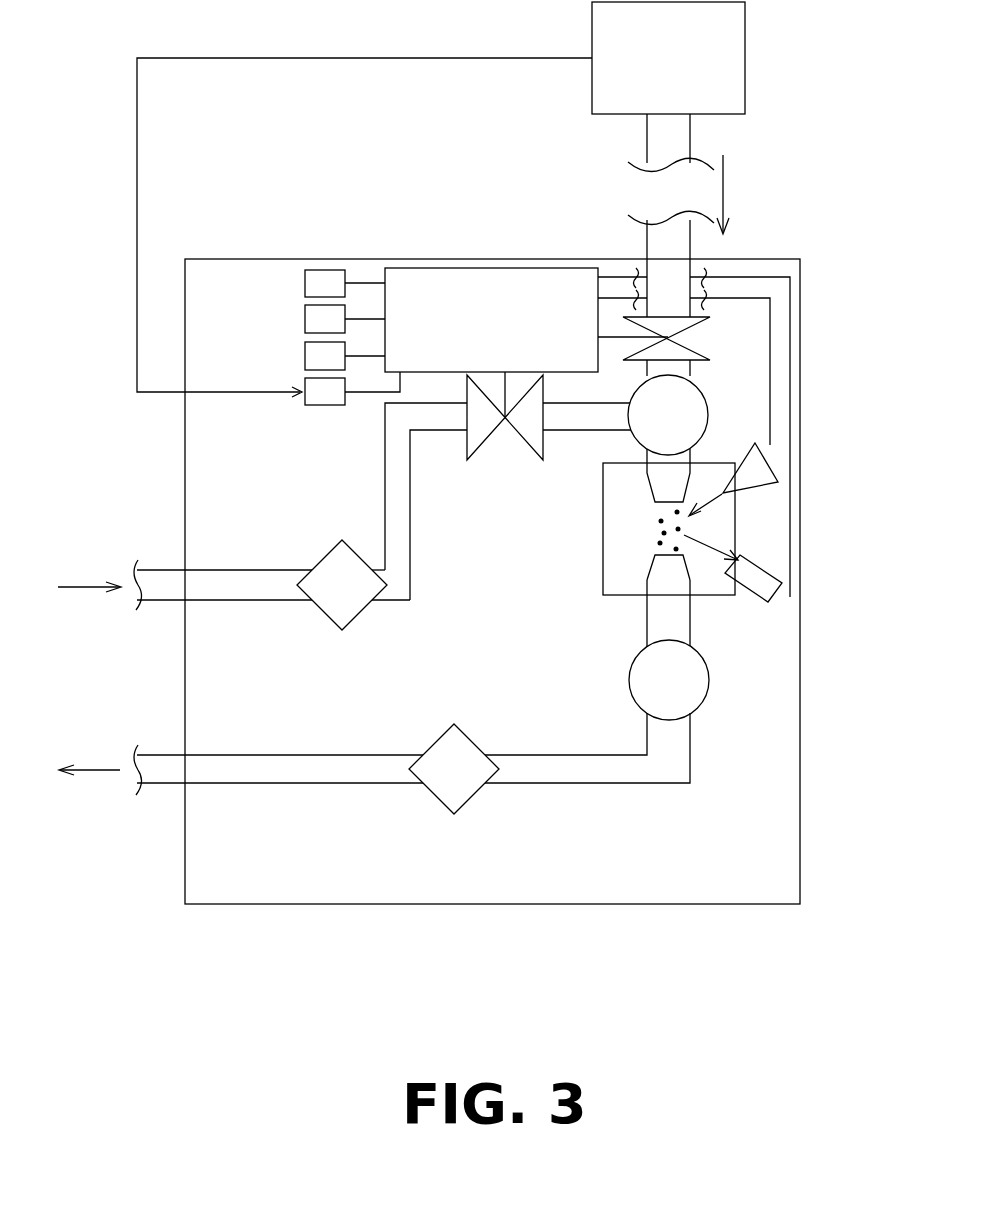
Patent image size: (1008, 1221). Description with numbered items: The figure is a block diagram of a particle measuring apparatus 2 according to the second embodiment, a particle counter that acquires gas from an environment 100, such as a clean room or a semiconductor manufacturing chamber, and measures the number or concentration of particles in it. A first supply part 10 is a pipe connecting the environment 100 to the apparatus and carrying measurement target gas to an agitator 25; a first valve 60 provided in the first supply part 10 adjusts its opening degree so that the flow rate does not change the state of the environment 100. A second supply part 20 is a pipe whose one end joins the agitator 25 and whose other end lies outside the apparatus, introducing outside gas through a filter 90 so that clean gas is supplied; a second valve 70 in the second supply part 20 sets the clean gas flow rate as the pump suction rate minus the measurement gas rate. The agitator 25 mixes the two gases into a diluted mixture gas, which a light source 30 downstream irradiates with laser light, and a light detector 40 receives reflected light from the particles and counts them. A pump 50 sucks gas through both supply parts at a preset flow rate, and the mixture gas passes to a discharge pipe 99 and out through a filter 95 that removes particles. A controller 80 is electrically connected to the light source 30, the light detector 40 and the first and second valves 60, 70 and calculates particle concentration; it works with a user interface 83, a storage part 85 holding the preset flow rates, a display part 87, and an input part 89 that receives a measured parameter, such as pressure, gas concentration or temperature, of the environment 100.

The particle measuring apparatus 2 is at (493, 1005).
The first supply part 10 is at (690, 372).
The second supply part 20 is at (582, 432).
The agitator 25 is at (706, 422).
The light source 30 is at (757, 492).
The light detector 40 is at (746, 602).
The pump 50 is at (629, 678).
The first valve 60 is at (706, 320).
The second valve 70 is at (480, 458).
The controller 80 is at (470, 268).
The user interface 83 is at (303, 283).
The storage part 85 is at (303, 318).
The display part 87 is at (303, 354).
The input part 89 is at (322, 405).
The filter 90 is at (362, 615).
The filter 95 is at (470, 800).
The discharge pipe 99 is at (288, 755).
The environment 100 is at (745, 55).